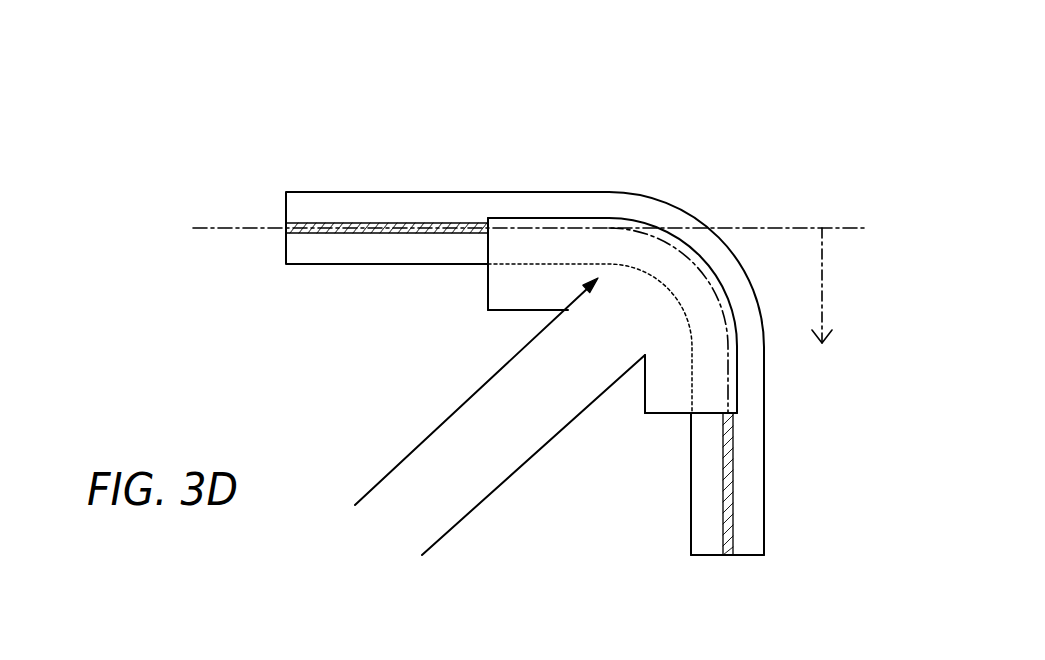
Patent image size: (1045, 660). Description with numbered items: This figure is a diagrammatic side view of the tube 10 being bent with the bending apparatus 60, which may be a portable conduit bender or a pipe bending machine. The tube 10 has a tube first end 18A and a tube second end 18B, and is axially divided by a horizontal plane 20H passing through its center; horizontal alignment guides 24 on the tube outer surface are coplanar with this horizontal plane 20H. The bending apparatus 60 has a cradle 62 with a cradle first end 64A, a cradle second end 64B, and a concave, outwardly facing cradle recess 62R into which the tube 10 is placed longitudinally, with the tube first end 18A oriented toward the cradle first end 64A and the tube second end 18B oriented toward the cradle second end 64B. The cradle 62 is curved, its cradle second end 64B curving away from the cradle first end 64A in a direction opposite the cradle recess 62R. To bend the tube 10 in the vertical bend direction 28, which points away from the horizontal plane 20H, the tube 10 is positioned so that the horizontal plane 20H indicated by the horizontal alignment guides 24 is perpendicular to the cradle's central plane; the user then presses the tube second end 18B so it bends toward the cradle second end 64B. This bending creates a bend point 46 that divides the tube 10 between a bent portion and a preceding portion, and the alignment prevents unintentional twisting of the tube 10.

The tube 10 is at (325, 173).
The tube first end 18A is at (286, 212).
The tube second end 18B is at (745, 557).
The horizontal plane 20H is at (837, 227).
The horizontal alignment guides 24 is at (317, 233).
The vertical bend direction 28 is at (822, 287).
The bend point 46 is at (563, 312).
The bending apparatus 60 is at (597, 398).
The cradle 62 is at (510, 285).
The cradle recess 62R is at (488, 283).
The cradle first end 64A is at (487, 243).
The cradle second end 64B is at (672, 415).